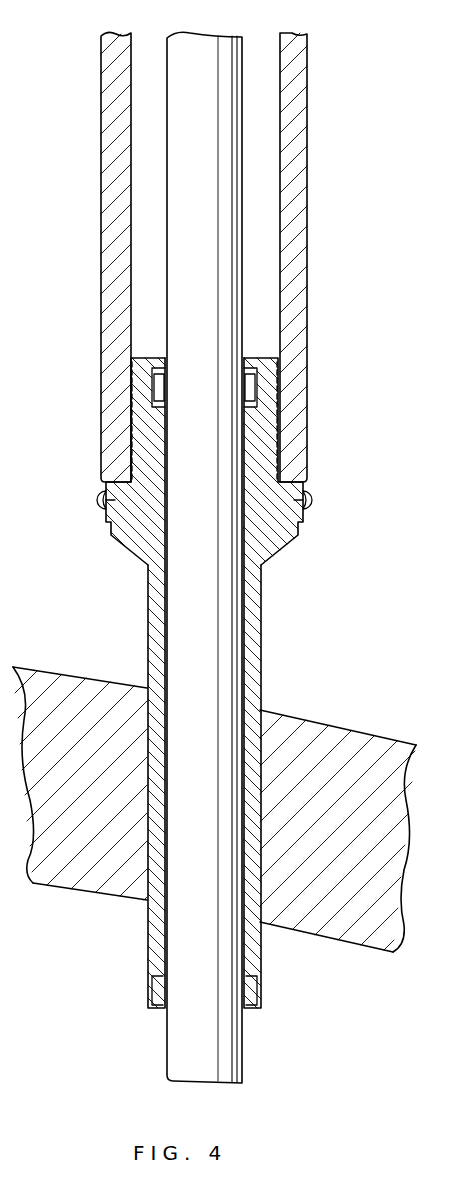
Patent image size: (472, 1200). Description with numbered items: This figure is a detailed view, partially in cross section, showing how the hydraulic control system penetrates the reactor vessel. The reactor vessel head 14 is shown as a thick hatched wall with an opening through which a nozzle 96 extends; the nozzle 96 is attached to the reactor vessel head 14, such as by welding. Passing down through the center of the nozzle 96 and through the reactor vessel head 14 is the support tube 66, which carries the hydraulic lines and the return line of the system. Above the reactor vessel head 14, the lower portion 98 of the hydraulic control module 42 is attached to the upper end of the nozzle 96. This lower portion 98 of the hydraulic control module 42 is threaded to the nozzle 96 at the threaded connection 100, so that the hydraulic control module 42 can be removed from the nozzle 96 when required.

The reactor vessel head 14 is at (306, 736).
The hydraulic control module 42 is at (332, 262).
The support tube 66 is at (226, 626).
The nozzle 96 is at (152, 630).
The lower portion of the hydraulic control module 98 is at (300, 395).
The threaded connection 100 is at (268, 437).